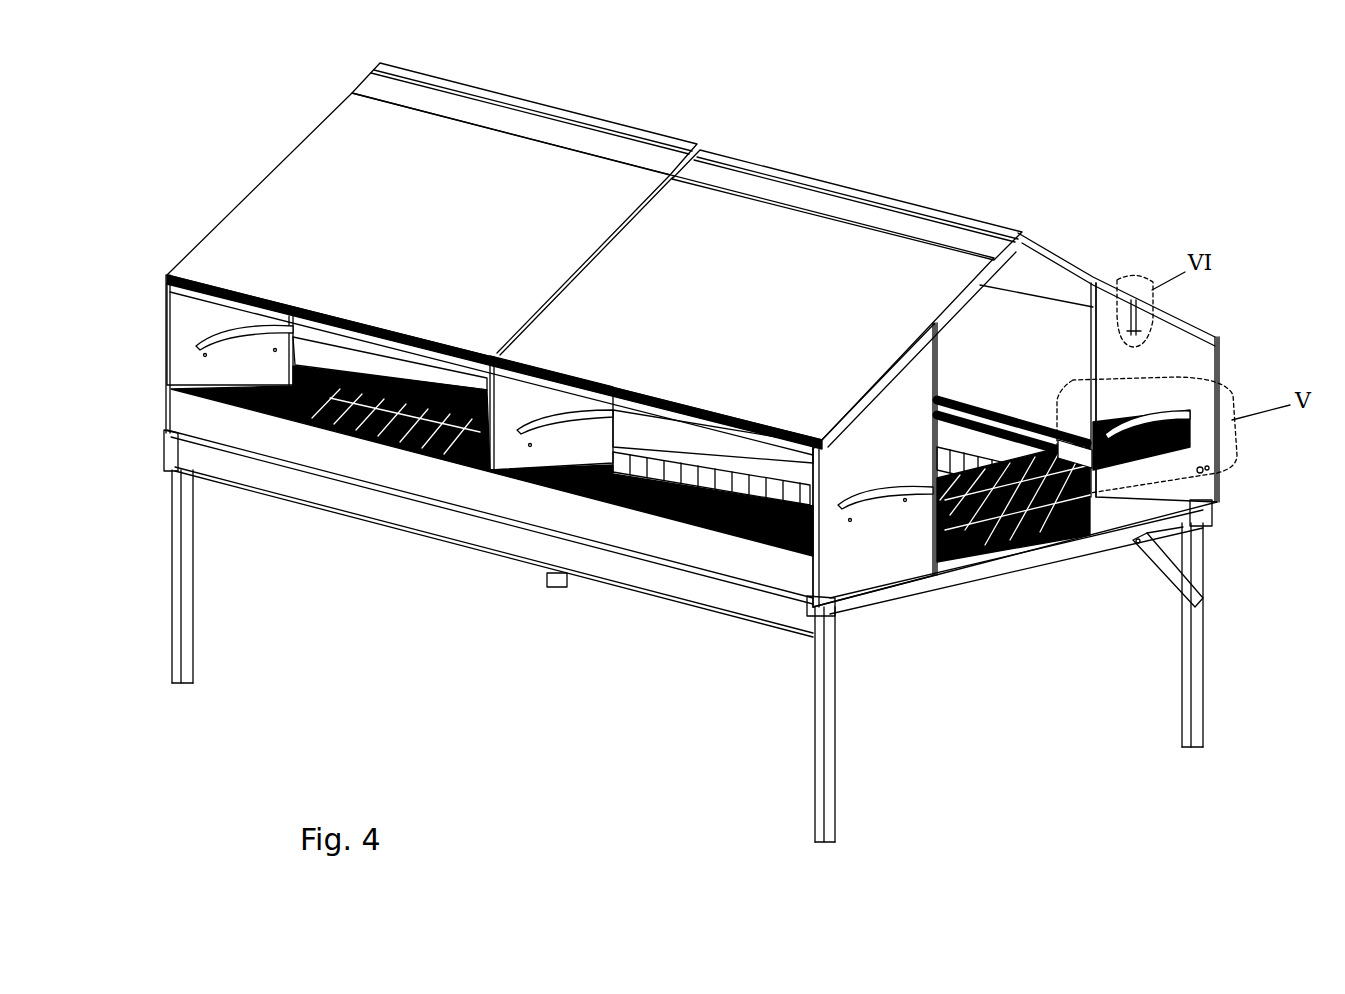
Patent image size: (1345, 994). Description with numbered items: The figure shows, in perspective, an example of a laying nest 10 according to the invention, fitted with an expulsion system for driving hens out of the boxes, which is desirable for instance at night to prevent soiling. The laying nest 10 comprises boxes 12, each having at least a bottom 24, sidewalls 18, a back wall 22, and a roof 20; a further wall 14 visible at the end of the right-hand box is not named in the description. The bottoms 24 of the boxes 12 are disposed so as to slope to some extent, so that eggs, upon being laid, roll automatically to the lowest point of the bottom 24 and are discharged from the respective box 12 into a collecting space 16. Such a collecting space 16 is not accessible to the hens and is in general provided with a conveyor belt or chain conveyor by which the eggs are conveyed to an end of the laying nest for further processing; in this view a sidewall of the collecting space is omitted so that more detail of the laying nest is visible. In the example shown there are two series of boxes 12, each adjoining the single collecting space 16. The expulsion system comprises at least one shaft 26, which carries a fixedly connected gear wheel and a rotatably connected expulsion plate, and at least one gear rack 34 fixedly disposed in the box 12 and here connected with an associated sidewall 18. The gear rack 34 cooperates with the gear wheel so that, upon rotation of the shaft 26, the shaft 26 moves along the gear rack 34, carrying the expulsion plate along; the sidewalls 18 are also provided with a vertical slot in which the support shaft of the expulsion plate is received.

The laying nest 10 is at (992, 183).
The box 12 is at (1235, 348).
The back wall 14 is at (1015, 311).
The collecting space 16 is at (987, 542).
The sidewall 18 is at (225, 369).
The roof 20 is at (727, 322).
The back wall 22 is at (697, 457).
The bottom 24 is at (365, 421).
The shaft 26 is at (1015, 428).
The gear rack 34 is at (1172, 430).